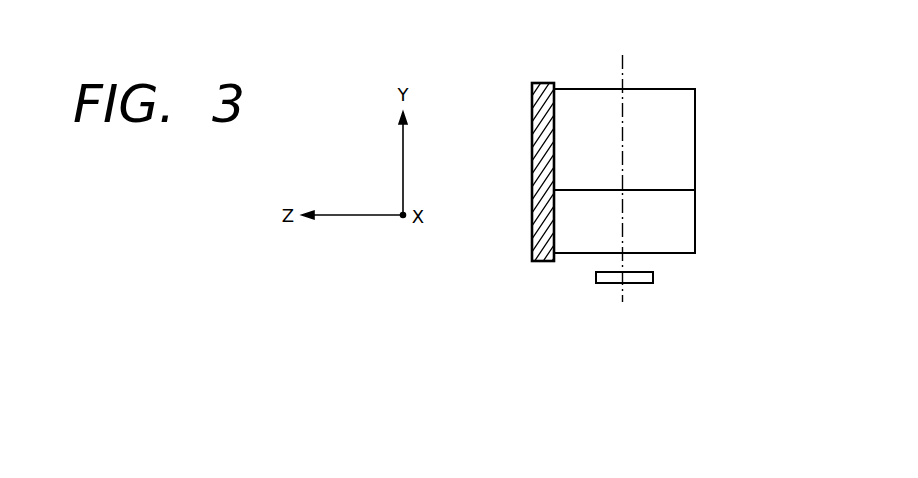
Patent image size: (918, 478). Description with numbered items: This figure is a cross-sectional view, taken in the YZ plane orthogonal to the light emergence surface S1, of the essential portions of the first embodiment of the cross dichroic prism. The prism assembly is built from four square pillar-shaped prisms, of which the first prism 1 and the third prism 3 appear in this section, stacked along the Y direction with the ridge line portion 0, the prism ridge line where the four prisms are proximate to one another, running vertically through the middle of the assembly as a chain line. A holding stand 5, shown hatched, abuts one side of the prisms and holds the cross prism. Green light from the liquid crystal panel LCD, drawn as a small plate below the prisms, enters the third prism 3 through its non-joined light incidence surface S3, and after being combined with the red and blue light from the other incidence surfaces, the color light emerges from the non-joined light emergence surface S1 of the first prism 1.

The first prism 1 is at (583, 98).
The third prism 3 is at (582, 246).
The holding stand 5 is at (531, 117).
The ridge line portion 0 is at (663, 190).
The light emergence surface S1 is at (673, 89).
The light incidence surface S3 is at (675, 251).
The liquid crystal panel LCD is at (637, 284).